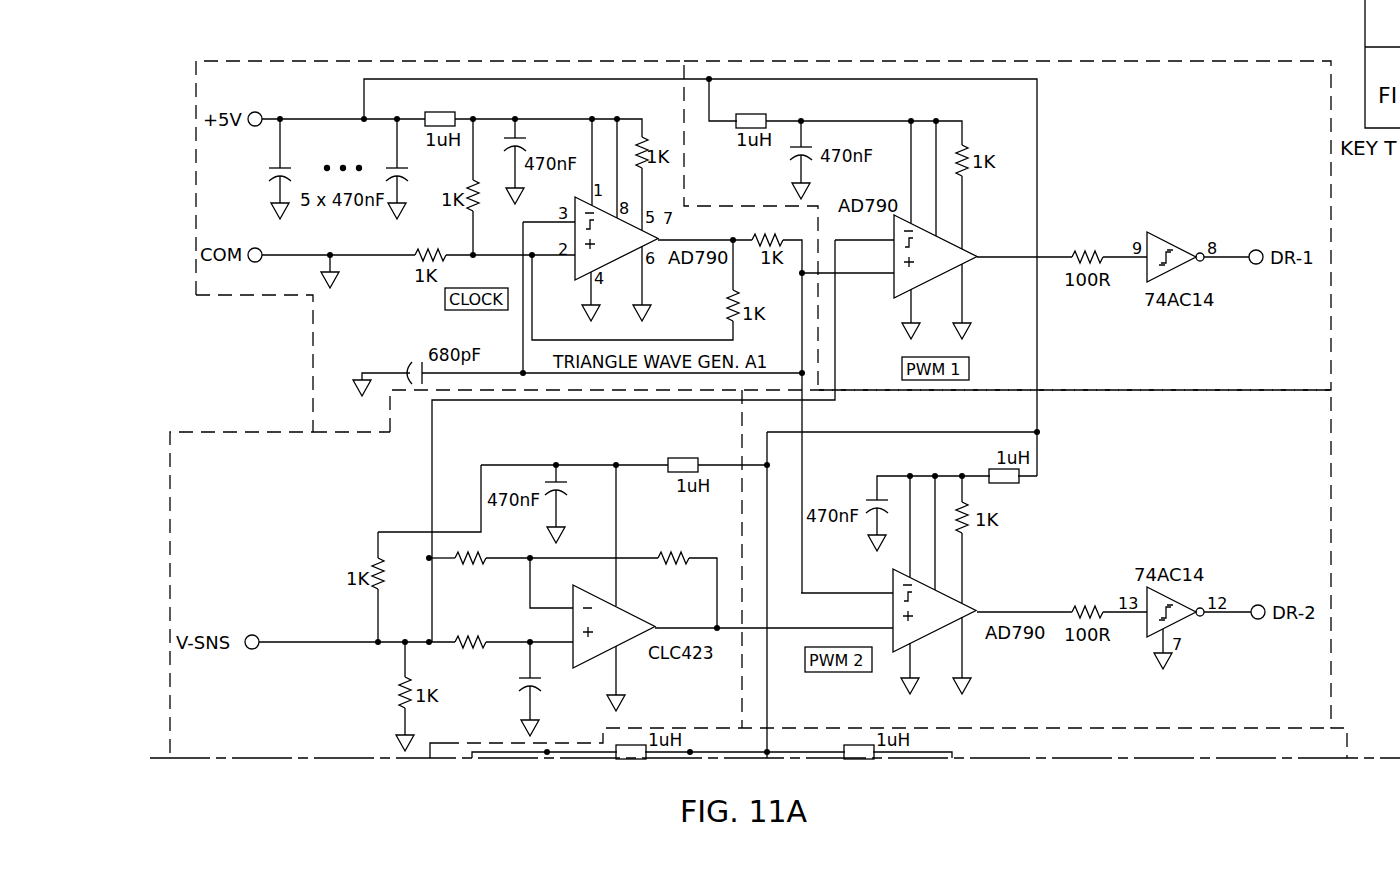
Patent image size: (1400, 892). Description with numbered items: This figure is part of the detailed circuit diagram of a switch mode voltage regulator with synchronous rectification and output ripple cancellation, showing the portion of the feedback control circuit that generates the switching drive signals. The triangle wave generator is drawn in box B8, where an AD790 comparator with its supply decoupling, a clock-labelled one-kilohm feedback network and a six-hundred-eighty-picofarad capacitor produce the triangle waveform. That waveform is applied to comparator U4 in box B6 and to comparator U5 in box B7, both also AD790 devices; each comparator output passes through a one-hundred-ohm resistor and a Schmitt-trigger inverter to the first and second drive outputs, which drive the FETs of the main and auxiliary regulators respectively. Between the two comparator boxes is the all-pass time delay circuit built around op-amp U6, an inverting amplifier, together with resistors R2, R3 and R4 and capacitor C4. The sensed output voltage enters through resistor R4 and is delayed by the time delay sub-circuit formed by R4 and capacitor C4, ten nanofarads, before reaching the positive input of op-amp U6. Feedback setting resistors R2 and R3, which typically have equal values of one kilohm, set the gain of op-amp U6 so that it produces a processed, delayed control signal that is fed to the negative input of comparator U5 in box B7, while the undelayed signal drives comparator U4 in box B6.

The box B8 is at (245, 60).
The box B6 is at (1180, 61).
The box B7 is at (1331, 447).
The comparator U4 is at (752, 381).
The comparator U5 is at (894, 623).
The op-amp U6 is at (636, 648).
The feedback setting resistor R2 is at (464, 571).
The feedback setting resistor R3 is at (673, 574).
The resistor R4 is at (473, 632).
The capacitor C4 is at (508, 689).